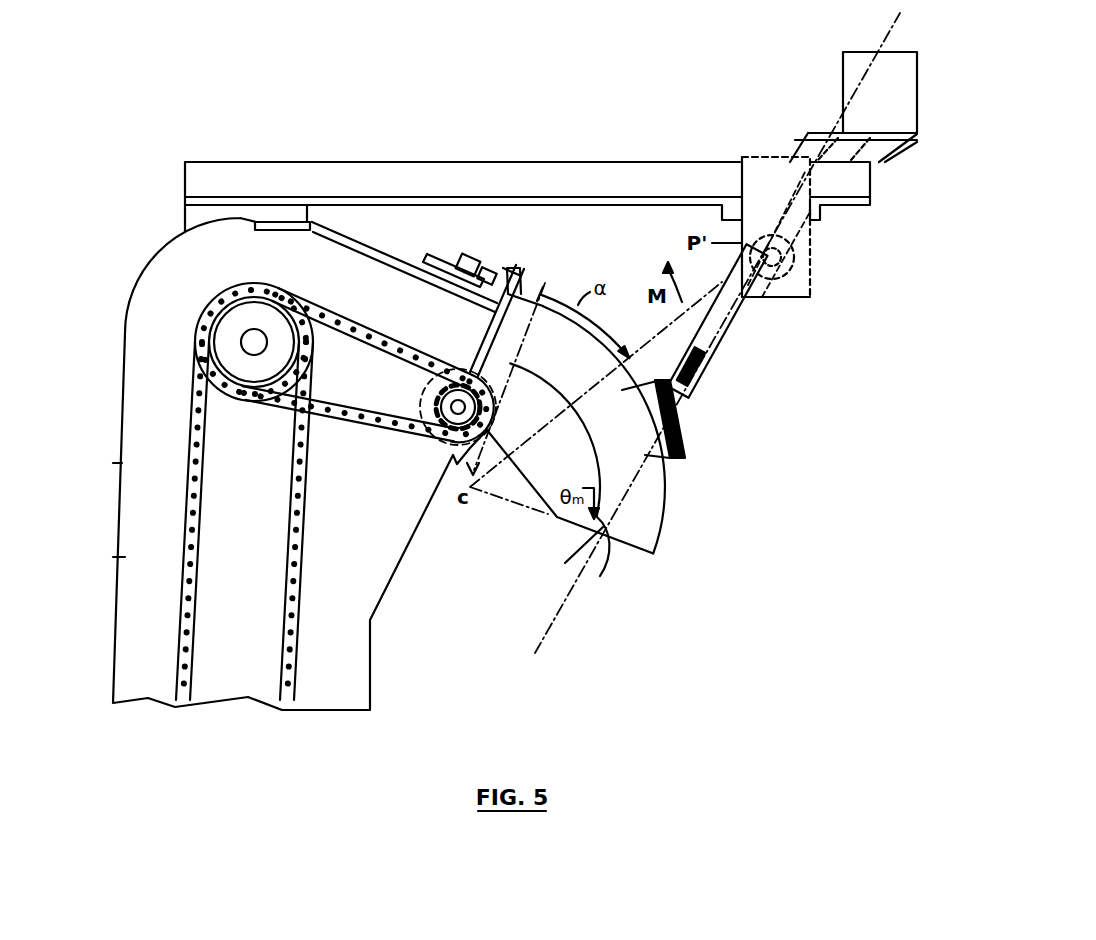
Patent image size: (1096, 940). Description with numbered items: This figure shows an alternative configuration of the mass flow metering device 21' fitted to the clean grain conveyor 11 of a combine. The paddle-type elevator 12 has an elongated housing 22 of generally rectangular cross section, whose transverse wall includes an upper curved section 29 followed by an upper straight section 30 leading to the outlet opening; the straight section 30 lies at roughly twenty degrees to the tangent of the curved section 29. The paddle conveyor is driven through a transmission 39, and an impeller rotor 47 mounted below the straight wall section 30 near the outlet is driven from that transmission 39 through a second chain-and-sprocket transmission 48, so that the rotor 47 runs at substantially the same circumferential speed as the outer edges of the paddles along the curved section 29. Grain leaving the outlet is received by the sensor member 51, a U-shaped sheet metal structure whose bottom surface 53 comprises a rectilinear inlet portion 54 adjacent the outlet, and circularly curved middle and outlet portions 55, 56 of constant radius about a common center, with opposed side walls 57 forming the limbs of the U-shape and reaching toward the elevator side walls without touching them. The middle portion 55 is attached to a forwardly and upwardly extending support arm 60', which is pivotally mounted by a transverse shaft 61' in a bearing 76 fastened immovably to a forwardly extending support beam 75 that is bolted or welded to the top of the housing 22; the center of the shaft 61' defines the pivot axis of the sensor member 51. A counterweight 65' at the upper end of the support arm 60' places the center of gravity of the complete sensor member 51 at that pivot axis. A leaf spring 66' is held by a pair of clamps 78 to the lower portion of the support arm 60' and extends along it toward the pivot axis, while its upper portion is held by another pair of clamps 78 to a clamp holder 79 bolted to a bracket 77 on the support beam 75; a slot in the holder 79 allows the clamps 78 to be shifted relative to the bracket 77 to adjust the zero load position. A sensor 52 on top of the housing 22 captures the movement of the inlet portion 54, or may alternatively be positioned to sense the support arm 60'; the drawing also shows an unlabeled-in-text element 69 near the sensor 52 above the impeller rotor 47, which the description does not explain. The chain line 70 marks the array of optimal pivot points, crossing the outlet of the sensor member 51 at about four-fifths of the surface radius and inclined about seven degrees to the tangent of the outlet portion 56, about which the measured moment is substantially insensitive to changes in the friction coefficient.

The clean grain conveyor 11 is at (125, 248).
The paddle-type elevator 12 is at (121, 464).
The mass flow metering device 21' is at (742, 377).
The housing 22 is at (133, 557).
The upper curved section 29 is at (134, 291).
The upper straight section 30 is at (386, 250).
The transmission 39 is at (309, 491).
The impeller rotor 47 is at (418, 389).
The second chain-and-sprocket transmission 48 is at (392, 432).
The sensor member 51 is at (573, 558).
The sensor 52 is at (462, 257).
The bottom surface 53 is at (603, 566).
The inlet portion 54 is at (516, 309).
The middle portion 55 is at (650, 510).
The outlet portion 56 is at (648, 549).
The side walls 57 is at (543, 474).
The support arm 60' is at (740, 330).
The transverse shaft 61' is at (806, 256).
The counterweight 65' is at (853, 106).
The leaf spring 66' is at (732, 356).
The connecting rod 69 is at (505, 266).
The chain line 70 is at (888, 43).
The support beam 75 is at (551, 170).
The bearing 76 is at (810, 216).
The bracket 77 is at (803, 299).
The clamps 78 is at (772, 308).
The clamp holder 79 is at (801, 280).